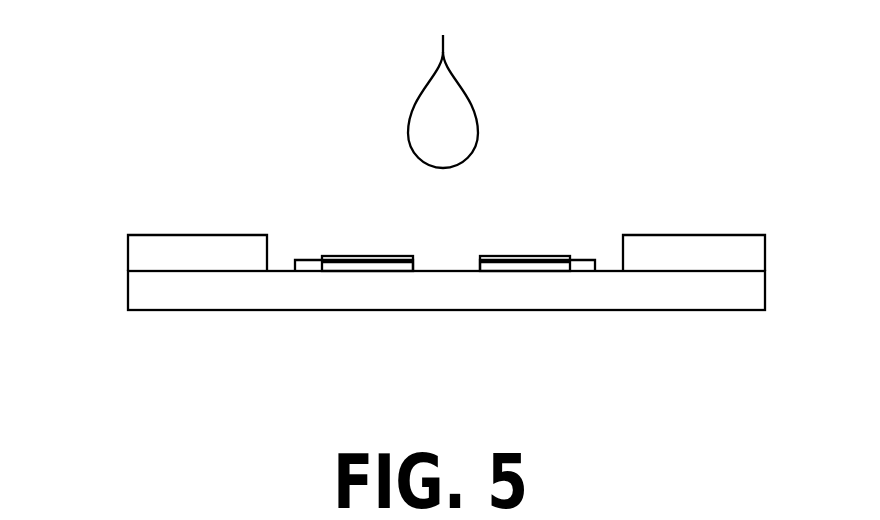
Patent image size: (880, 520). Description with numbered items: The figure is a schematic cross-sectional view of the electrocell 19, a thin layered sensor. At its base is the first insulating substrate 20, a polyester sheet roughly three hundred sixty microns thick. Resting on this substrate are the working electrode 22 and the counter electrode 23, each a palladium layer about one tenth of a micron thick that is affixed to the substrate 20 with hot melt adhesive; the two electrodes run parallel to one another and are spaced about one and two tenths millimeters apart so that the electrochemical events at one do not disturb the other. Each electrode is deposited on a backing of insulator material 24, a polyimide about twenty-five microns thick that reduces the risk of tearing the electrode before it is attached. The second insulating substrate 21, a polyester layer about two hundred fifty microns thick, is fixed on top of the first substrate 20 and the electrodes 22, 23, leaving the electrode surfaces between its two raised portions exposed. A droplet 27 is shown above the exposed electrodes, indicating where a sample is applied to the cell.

The electrocell 19 is at (133, 156).
The first insulating substrate 20 is at (176, 290).
The second insulating substrate 21 is at (176, 254).
The working electrode 22 is at (295, 310).
The counter electrode 23 is at (595, 310).
The insulator material backing 24 is at (397, 271).
The liquid droplet 27 is at (446, 127).